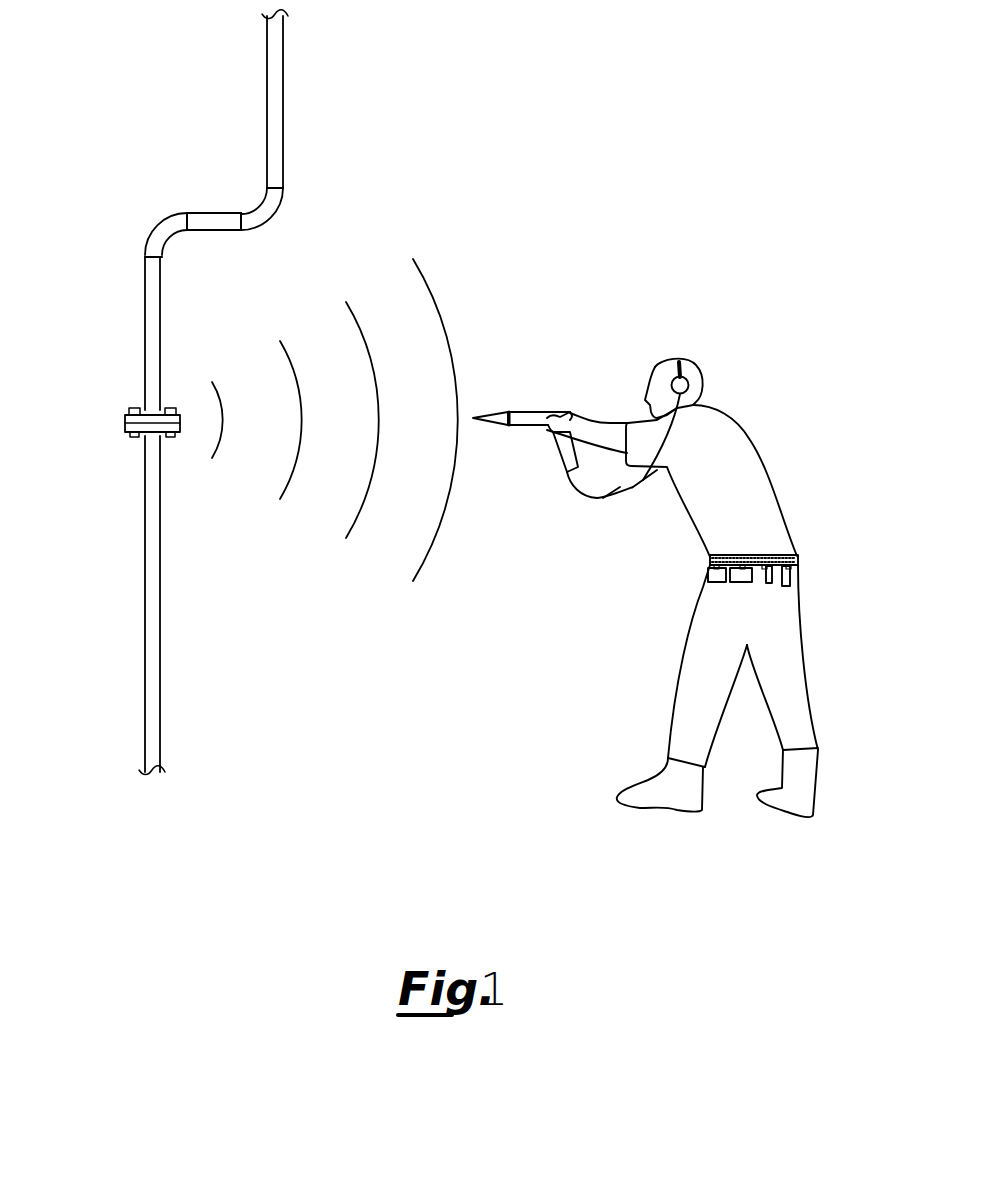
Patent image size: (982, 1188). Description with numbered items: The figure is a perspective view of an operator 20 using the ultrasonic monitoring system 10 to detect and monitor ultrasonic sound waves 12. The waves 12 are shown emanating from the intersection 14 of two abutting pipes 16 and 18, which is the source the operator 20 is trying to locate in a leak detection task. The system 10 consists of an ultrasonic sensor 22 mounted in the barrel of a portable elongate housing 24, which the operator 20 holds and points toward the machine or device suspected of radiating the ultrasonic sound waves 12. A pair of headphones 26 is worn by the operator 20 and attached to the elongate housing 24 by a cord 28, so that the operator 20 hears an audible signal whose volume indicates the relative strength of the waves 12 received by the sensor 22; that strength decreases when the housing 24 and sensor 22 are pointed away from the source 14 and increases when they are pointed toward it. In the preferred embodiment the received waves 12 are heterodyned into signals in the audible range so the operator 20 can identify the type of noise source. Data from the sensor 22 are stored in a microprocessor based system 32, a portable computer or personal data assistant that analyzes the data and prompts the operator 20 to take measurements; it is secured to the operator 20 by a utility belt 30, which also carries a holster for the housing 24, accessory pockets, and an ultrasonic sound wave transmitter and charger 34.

The ultrasonic monitoring system 10 is at (637, 301).
The ultrasonic sound waves 12 is at (424, 274).
The intersection 14 is at (125, 421).
The pipe 16 is at (146, 357).
The pipe 18 is at (146, 553).
The operator 20 is at (805, 449).
The ultrasonic sensor 22 is at (495, 411).
The portable elongate housing 24 is at (524, 409).
The headphones 26 is at (679, 363).
The cord 28 is at (606, 499).
The utility belt 30 is at (800, 557).
The microprocessor based system 32 is at (708, 572).
The ultrasonic sound wave transmitter and charger 34 is at (735, 584).